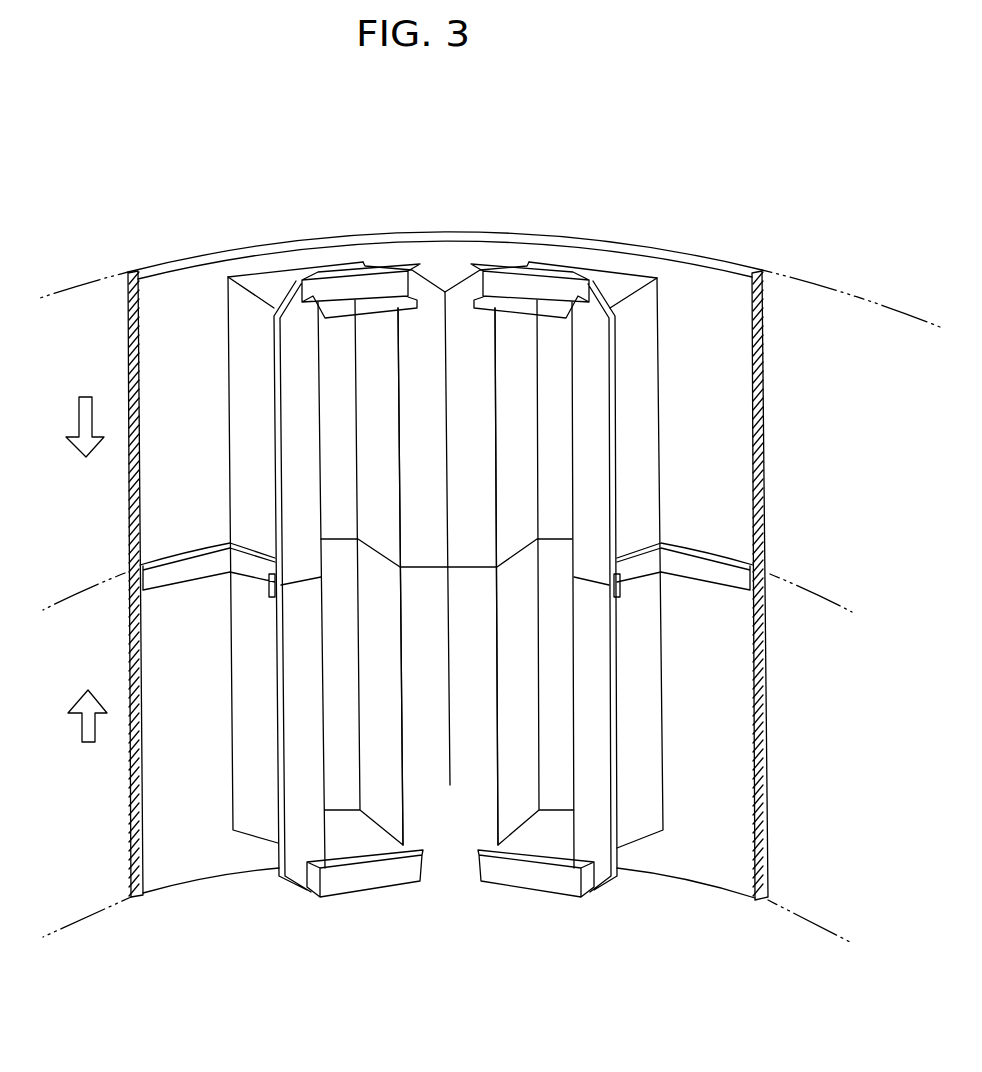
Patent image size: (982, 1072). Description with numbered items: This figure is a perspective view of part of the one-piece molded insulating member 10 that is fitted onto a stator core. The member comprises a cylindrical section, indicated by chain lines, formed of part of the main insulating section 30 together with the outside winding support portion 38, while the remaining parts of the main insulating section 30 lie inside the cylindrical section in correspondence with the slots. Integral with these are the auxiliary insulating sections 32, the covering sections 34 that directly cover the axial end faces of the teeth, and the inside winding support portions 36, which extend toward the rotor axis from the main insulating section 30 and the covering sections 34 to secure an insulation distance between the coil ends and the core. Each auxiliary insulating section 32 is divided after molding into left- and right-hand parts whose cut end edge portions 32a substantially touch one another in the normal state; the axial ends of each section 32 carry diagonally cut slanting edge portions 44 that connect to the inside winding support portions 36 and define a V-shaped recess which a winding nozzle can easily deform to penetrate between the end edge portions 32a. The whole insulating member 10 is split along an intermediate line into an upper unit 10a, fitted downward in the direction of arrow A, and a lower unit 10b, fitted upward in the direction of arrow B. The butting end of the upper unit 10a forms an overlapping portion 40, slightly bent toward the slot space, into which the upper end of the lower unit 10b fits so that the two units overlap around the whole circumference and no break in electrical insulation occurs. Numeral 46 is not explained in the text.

The insulating member 10 is at (320, 196).
The upper unit 10a is at (772, 450).
The lower unit 10b is at (772, 672).
The main insulating section 30 is at (162, 352).
The auxiliary insulating section 32 is at (287, 367).
The cut end edge portion 32a is at (500, 318).
The covering section 34 is at (292, 347).
The inside winding support portion 36 is at (382, 282).
The outside winding support portion 38 is at (440, 250).
The overlapping portion 40 is at (183, 575).
The slanting edge portion 44 is at (260, 279).
The center gap 46 is at (457, 300).